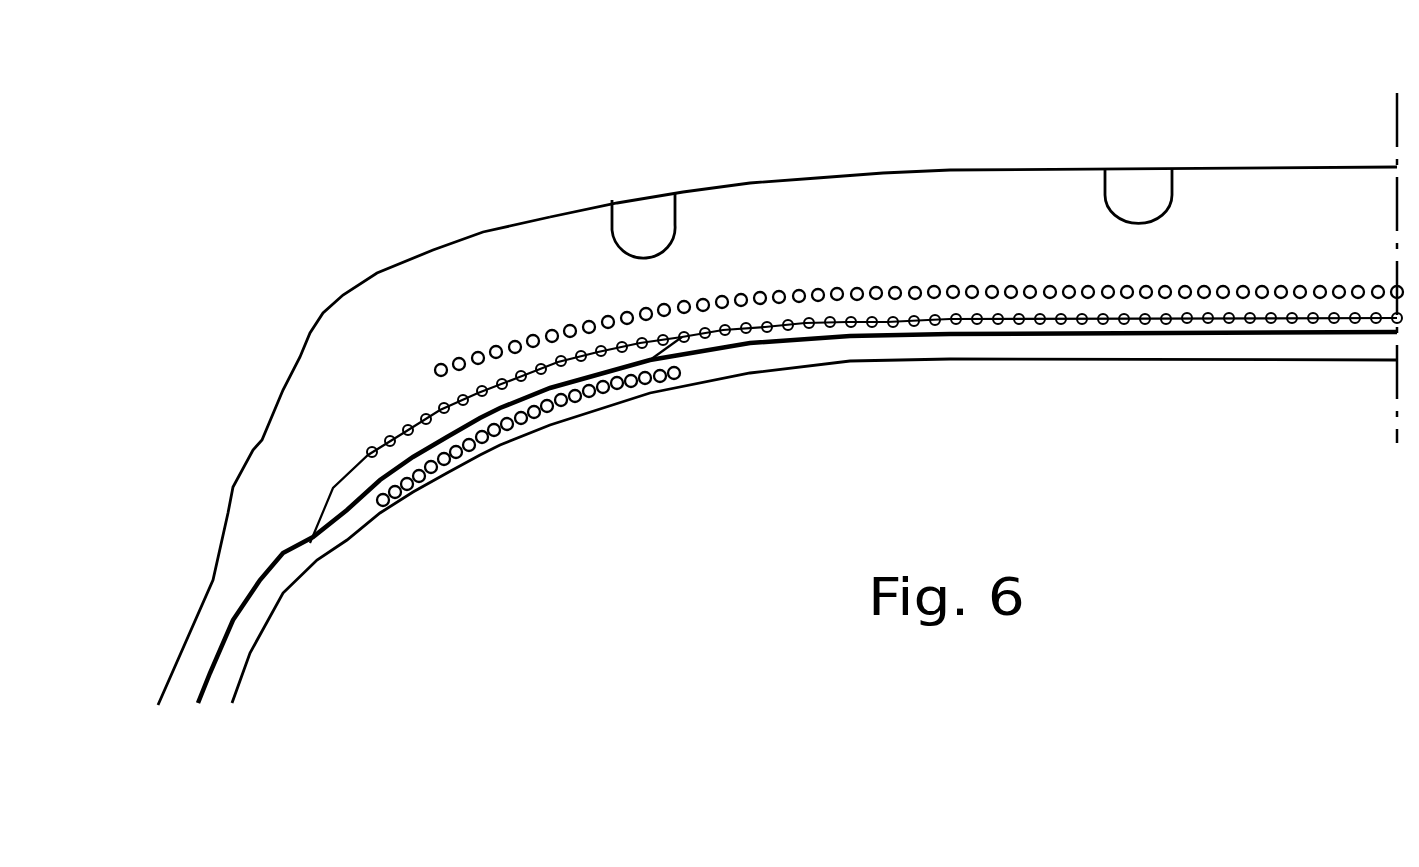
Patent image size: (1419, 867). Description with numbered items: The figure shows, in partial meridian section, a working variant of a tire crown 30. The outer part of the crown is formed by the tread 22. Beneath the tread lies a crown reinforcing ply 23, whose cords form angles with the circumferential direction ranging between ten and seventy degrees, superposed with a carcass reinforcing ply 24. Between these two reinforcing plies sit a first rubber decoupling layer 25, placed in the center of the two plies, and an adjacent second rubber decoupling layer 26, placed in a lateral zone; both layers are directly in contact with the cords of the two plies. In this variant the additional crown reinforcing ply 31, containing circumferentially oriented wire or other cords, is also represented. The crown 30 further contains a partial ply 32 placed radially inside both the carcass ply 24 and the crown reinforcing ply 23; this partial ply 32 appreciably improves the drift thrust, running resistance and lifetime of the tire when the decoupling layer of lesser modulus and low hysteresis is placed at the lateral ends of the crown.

The tire crown 30 is at (698, 133).
The tread 22 is at (1012, 203).
The additional crown reinforcing ply 31 is at (1240, 290).
The first rubber decoupling layer 25 is at (757, 337).
The carcass reinforcing ply 24 is at (1062, 333).
The crown reinforcing ply 23 is at (1253, 320).
The partial ply 32 is at (548, 400).
The second rubber decoupling layer 26 is at (398, 452).